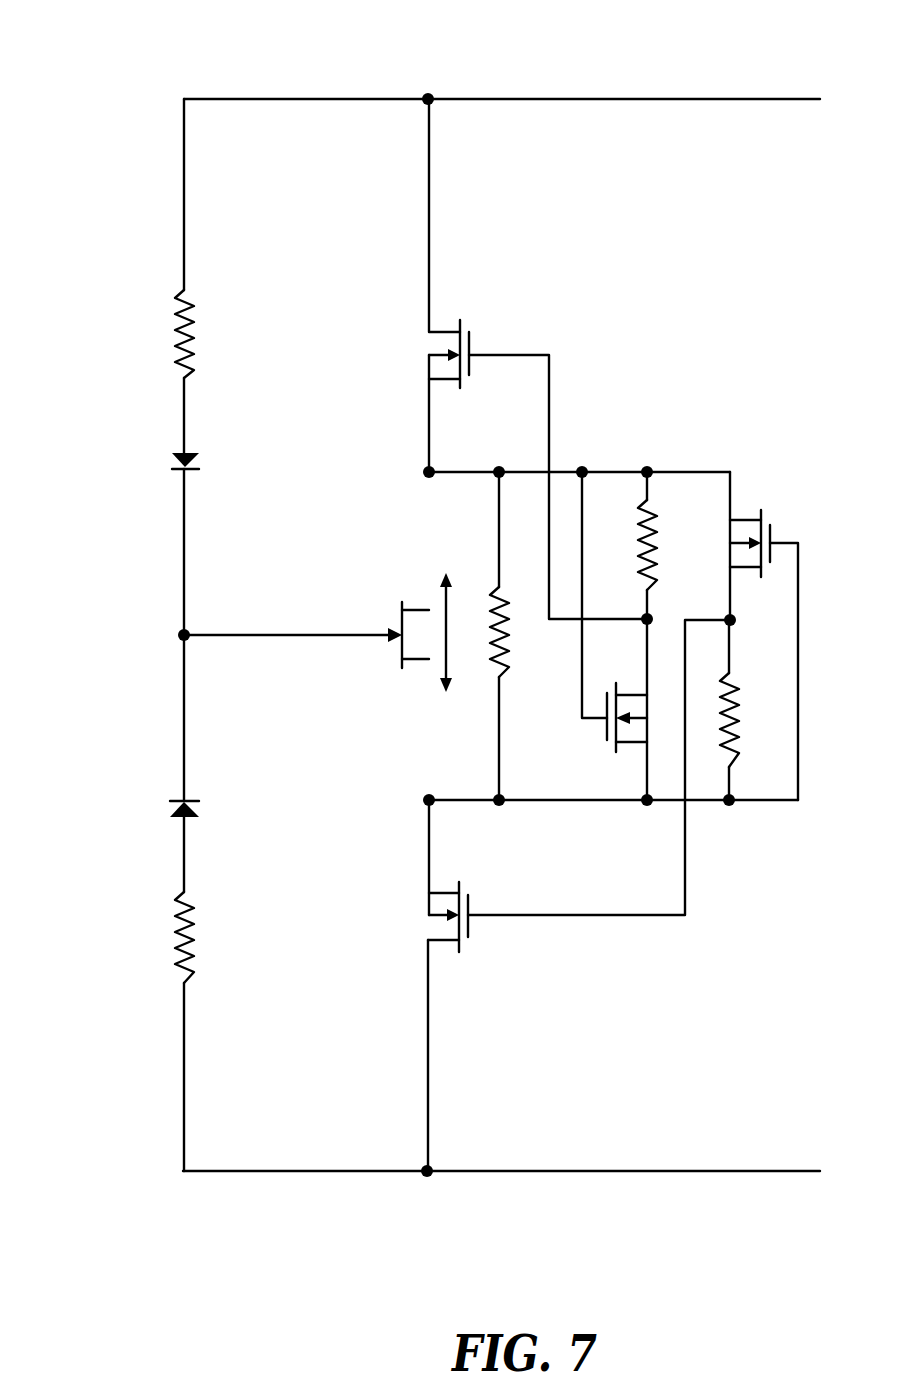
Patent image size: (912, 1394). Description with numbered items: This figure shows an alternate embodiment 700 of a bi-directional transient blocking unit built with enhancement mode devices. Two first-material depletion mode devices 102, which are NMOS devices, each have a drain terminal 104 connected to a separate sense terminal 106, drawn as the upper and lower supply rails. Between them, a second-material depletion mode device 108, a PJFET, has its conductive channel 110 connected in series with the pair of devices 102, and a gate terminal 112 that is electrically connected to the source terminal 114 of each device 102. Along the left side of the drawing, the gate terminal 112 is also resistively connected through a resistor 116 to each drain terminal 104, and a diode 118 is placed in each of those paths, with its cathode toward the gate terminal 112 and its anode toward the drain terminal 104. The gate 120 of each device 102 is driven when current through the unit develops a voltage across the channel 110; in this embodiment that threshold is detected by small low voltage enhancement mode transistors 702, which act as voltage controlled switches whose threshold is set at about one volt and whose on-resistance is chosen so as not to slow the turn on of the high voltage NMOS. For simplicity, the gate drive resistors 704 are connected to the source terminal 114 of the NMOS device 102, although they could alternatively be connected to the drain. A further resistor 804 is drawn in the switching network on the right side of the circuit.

The alternate embodiment 700 is at (107, 87).
The sense terminal 106 is at (520, 99).
The drain terminal 104 is at (440, 330).
The first-material depletion mode device 102 is at (492, 320).
The gate 120 is at (490, 354).
The source terminal 114 is at (439, 382).
The second-material depletion mode device 108 is at (380, 590).
The conductive channel 110 is at (452, 620).
The gate terminal 112 is at (383, 642).
The resistive connection 116 is at (200, 327).
The diode 118 is at (187, 456).
The gate drive resistor 704 is at (657, 508).
The enhancement mode transistor 702 is at (793, 500).
The resistor 804 is at (732, 703).